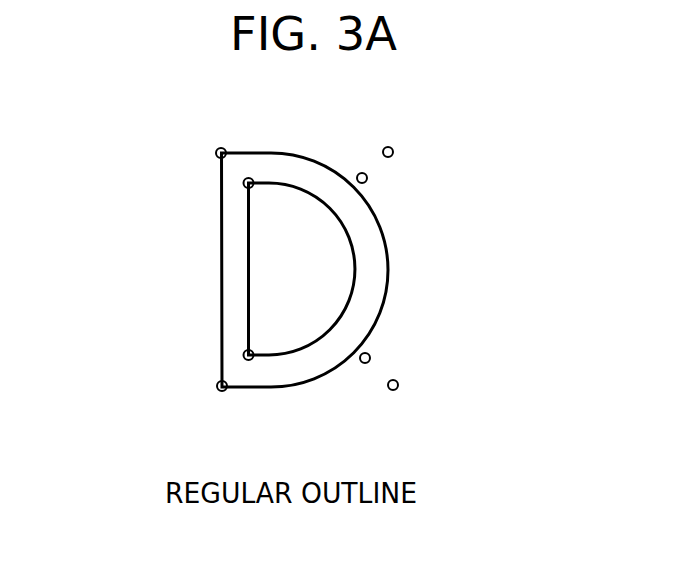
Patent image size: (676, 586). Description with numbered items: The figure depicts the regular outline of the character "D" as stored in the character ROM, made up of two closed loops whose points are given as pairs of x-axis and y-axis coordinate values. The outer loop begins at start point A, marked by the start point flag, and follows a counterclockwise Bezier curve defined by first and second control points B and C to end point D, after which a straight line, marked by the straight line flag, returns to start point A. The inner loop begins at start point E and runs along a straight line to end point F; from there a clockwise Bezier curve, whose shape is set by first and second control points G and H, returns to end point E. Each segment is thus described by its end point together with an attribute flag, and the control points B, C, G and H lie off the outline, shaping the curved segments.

The start point A is at (219, 390).
The first control point B is at (389, 389).
The second control point C is at (383, 152).
The end point D is at (215, 153).
The start point E is at (244, 356).
The end point F is at (244, 184).
The first control point G is at (366, 182).
The second control point H is at (368, 354).